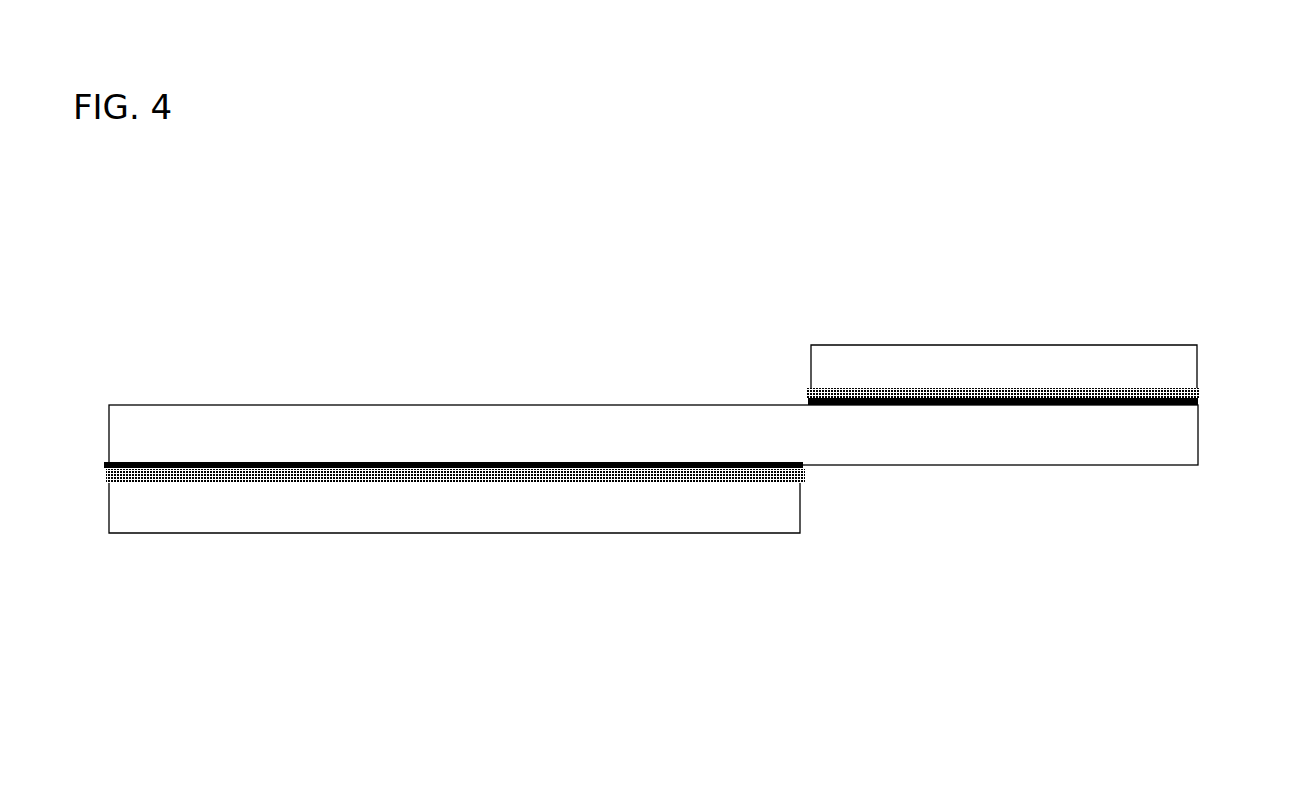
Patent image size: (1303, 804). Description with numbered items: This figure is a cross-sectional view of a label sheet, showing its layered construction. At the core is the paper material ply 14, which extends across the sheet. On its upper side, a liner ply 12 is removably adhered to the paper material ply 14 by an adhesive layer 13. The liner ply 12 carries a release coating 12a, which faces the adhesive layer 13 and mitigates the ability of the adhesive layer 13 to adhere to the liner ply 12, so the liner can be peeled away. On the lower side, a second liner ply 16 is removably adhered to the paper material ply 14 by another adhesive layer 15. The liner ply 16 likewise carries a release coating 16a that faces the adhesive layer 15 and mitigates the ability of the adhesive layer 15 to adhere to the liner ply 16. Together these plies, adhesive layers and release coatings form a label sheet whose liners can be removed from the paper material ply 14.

The liner ply 12 is at (978, 360).
The release coating 12a is at (1155, 387).
The adhesive layer 13 is at (1103, 413).
The paper material ply 14 is at (1088, 450).
The adhesive layer 15 is at (188, 456).
The liner ply 16 is at (433, 522).
The release coating 16a is at (607, 482).